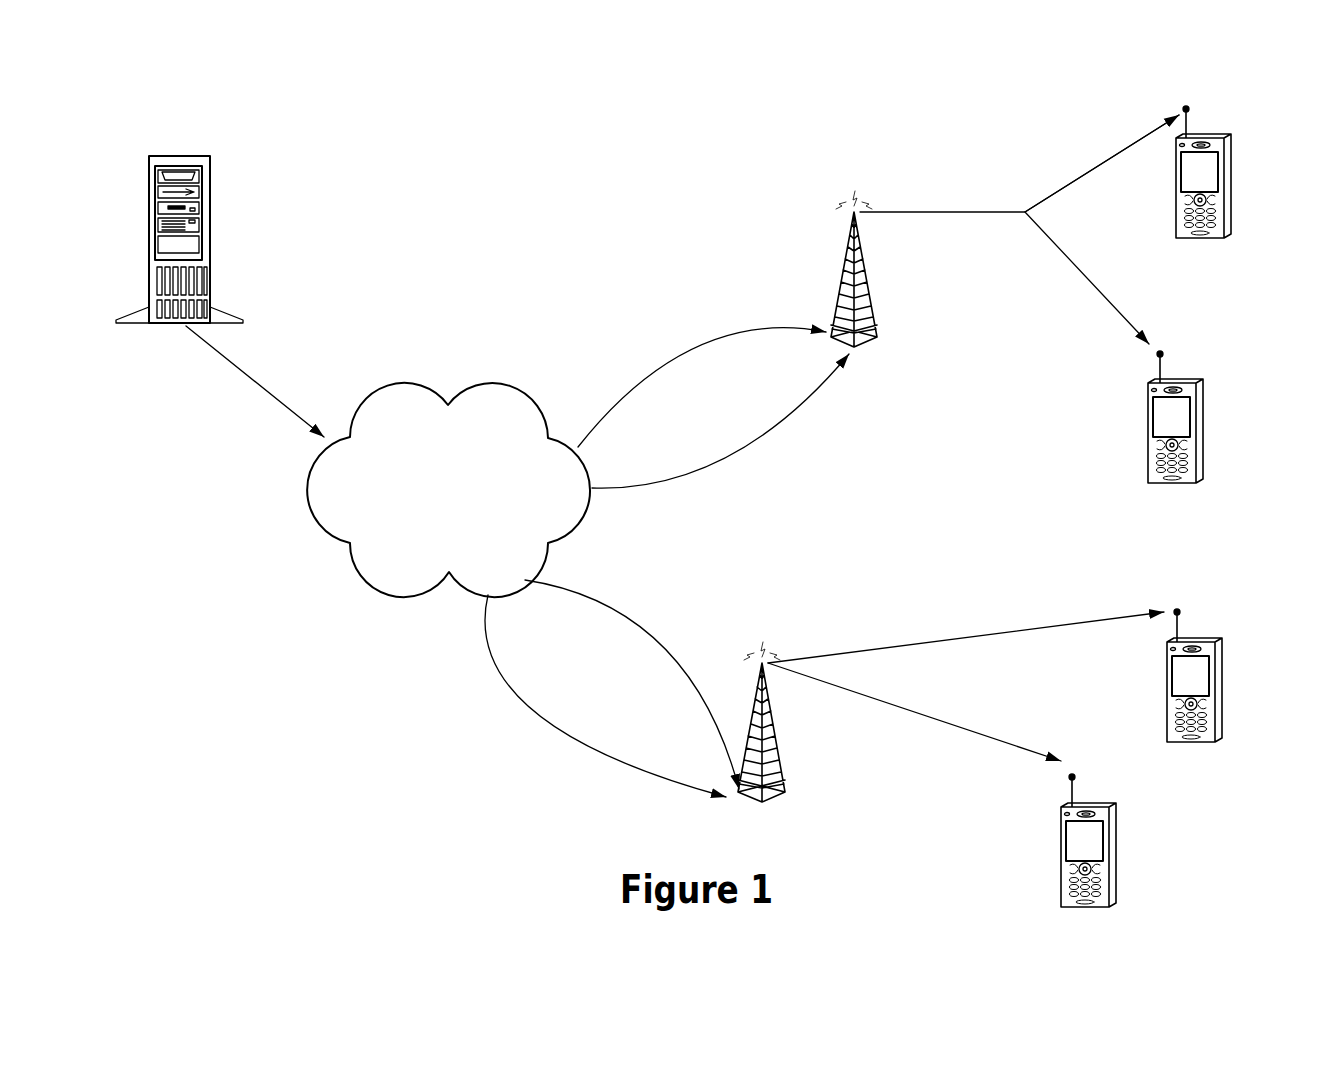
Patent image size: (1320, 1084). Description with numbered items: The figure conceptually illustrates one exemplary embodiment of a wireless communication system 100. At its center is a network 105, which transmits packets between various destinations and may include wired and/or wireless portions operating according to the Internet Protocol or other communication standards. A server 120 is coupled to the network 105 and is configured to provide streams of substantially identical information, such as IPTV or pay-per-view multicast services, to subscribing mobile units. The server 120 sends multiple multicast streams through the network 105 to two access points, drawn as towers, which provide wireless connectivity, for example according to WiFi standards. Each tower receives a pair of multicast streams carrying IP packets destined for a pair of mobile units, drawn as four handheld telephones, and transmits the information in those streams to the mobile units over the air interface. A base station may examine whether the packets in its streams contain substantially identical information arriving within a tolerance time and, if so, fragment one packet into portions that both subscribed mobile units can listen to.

The wireless communication system 100 is at (447, 122).
The network 105 is at (431, 500).
The server 120 is at (212, 240).